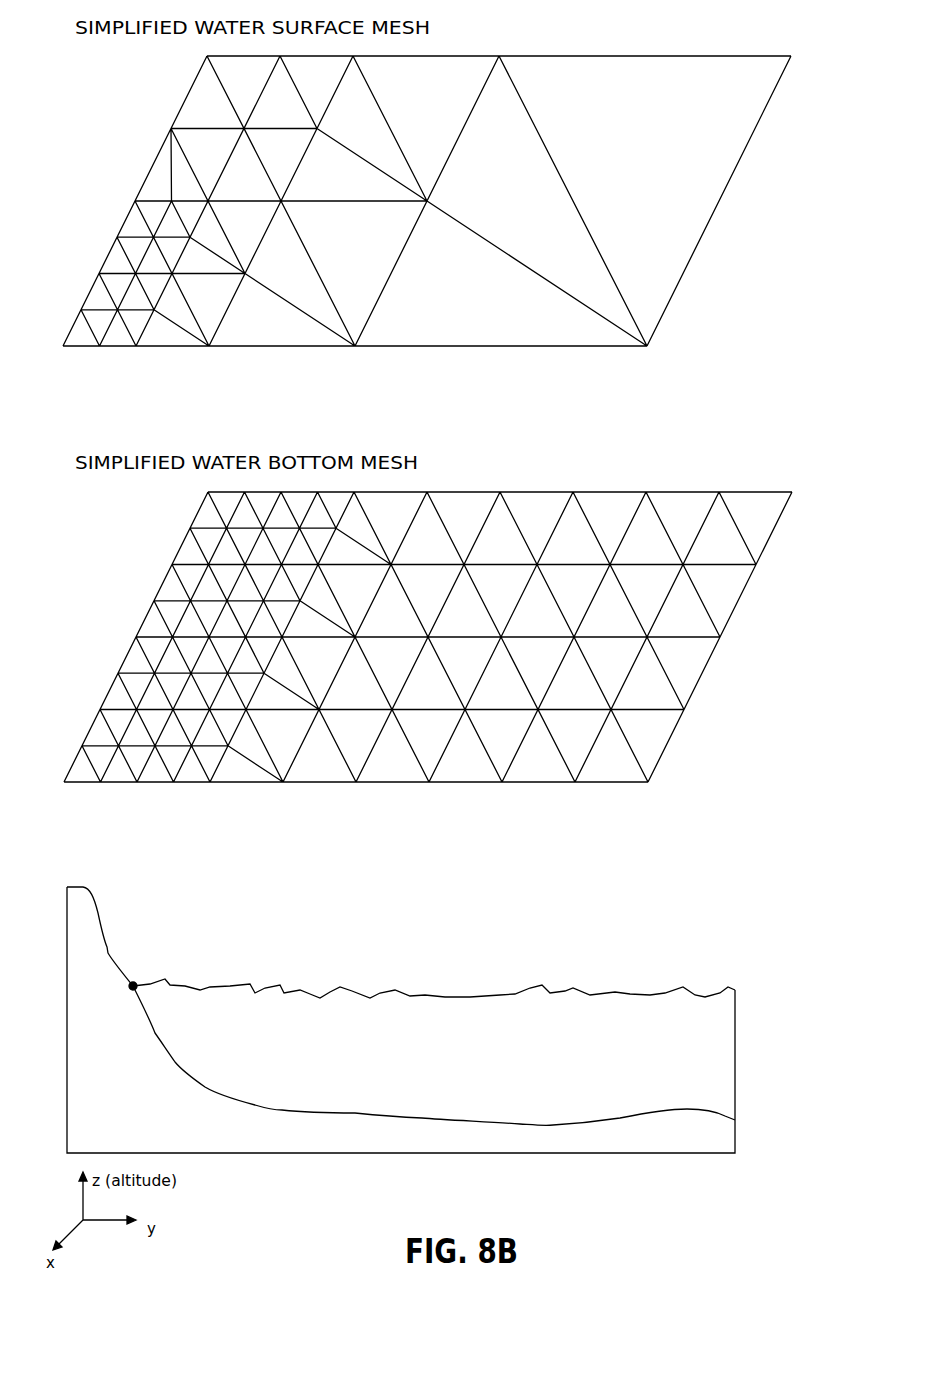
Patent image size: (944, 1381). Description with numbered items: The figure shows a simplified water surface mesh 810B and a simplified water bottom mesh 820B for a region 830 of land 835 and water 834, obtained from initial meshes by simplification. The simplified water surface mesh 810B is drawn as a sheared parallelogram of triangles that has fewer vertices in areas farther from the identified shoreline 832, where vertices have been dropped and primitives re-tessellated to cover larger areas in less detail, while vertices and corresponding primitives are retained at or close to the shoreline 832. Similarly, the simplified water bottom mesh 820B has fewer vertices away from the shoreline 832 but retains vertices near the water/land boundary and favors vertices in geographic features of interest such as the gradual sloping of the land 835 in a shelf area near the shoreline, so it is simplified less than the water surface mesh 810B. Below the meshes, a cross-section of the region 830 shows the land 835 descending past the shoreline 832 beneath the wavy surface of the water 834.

The simplified water surface mesh 810B is at (112, 161).
The simplified water bottom mesh 820B is at (114, 634).
The region 830 is at (446, 1006).
The shoreline 832 is at (134, 984).
The water 834 is at (434, 1021).
The land 835 is at (684, 1135).